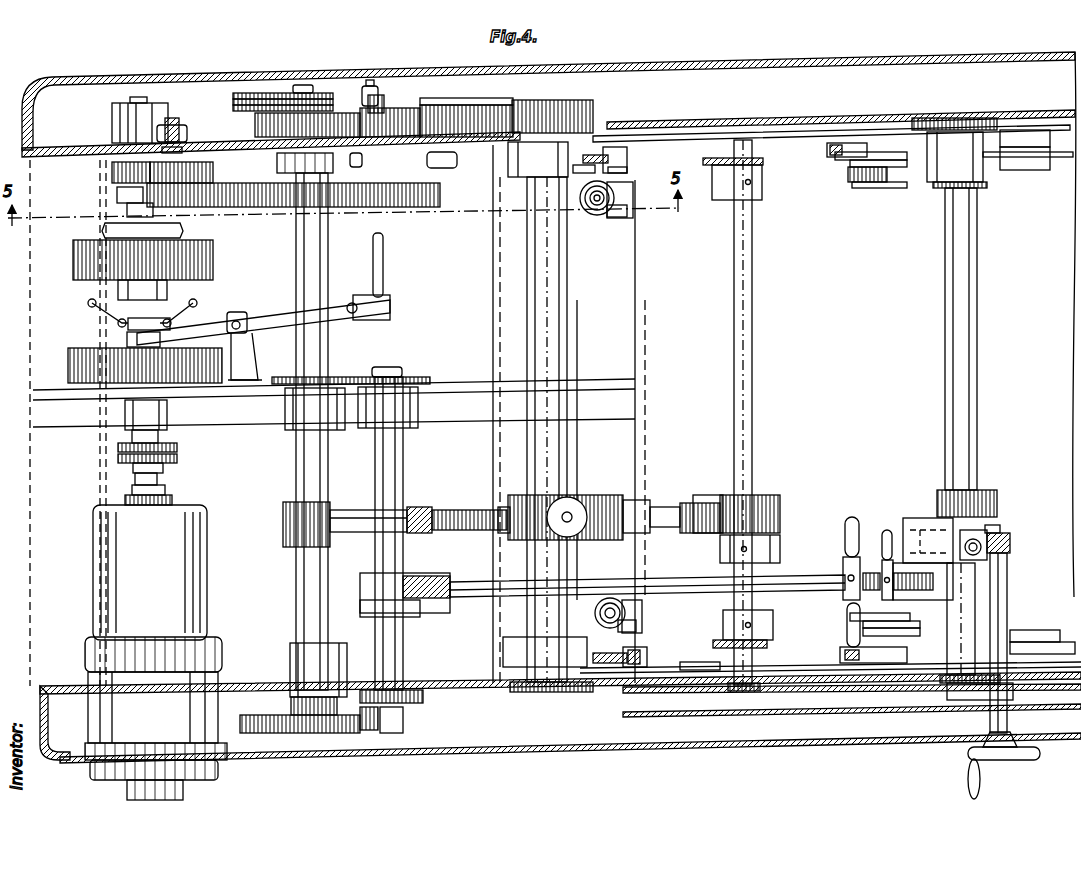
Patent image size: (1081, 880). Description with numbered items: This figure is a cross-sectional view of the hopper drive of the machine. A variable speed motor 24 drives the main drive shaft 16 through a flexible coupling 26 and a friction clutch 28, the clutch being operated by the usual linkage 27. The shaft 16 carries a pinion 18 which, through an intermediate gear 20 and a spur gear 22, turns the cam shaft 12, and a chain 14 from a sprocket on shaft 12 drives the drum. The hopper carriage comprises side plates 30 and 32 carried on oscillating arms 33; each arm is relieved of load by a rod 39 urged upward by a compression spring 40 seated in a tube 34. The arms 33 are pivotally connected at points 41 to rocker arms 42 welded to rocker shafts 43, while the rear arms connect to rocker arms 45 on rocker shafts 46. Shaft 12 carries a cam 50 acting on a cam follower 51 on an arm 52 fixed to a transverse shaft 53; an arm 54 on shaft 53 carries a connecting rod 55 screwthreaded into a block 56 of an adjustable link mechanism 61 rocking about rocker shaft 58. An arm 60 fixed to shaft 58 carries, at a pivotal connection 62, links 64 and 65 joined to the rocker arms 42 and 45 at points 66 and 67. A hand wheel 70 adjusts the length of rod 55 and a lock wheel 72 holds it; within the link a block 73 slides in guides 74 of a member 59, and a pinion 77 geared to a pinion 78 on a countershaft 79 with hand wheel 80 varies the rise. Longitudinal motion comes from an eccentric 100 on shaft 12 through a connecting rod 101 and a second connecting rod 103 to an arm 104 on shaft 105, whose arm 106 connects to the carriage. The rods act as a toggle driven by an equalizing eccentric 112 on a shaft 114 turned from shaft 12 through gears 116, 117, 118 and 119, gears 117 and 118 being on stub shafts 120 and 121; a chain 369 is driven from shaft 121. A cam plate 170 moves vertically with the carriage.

The shaft 12 is at (320, 580).
The chain 14 is at (257, 93).
The main drive shaft 16 is at (141, 97).
The pinion 18 is at (112, 175).
The intermediate gear 20 is at (200, 170).
The spur gear 22 is at (388, 200).
The variable speed motor 24 is at (197, 520).
The flexible coupling 26 is at (177, 456).
The linkage 27 is at (392, 290).
The friction clutch 28 is at (213, 262).
The side plate 30 is at (623, 693).
The side plate 32 is at (697, 120).
The oscillating arm 33 is at (600, 165).
The tube 34 is at (630, 207).
The rod 39 is at (597, 215).
The compression spring 40 is at (600, 217).
The pivotal connection point 41 is at (620, 174).
The rocker arm 42 is at (792, 140).
The rocker shaft 43 is at (627, 160).
The rocker arm 45 is at (1063, 158).
The rocker shaft 46 is at (1020, 170).
The cam 50 is at (312, 723).
The cam follower 51 is at (402, 727).
The arm 52 is at (423, 702).
The shaft 53 is at (395, 470).
The arm 54 is at (417, 614).
The connecting rod 55 is at (670, 583).
The block 56 is at (900, 560).
The rocker shaft 58 is at (967, 350).
The member 59 is at (930, 517).
The arm 60 is at (910, 188).
The adjustable link mechanism 61 is at (1005, 527).
The pivotal connection 62 is at (872, 187).
The link 64 is at (840, 157).
The link 65 is at (900, 175).
The connection point 66 is at (830, 158).
The connection point 67 is at (880, 150).
The hand wheel 70 is at (847, 540).
The lock wheel 72 is at (883, 530).
The block 73 is at (936, 543).
The guides 74 is at (920, 530).
The pinion 77 is at (992, 513).
The pinion 78 is at (1010, 543).
The countershaft 79 is at (1007, 580).
The hand wheel 80 is at (1022, 758).
The eccentric 100 is at (300, 512).
The connecting rod 101 is at (467, 510).
The second connecting rod 103 is at (665, 510).
The arm 104 is at (780, 546).
The shaft 105 is at (748, 348).
The arm 106 is at (718, 192).
The equalizing eccentric 112 is at (593, 503).
The shaft 114 is at (550, 330).
The gear 116 is at (578, 105).
The gear 117 is at (452, 118).
The gear 118 is at (385, 130).
The gear 119 is at (258, 123).
The stub shaft 120 is at (445, 105).
The stub shaft 121 is at (380, 103).
The cam plate 170 is at (803, 712).
The chain 369 is at (365, 84).